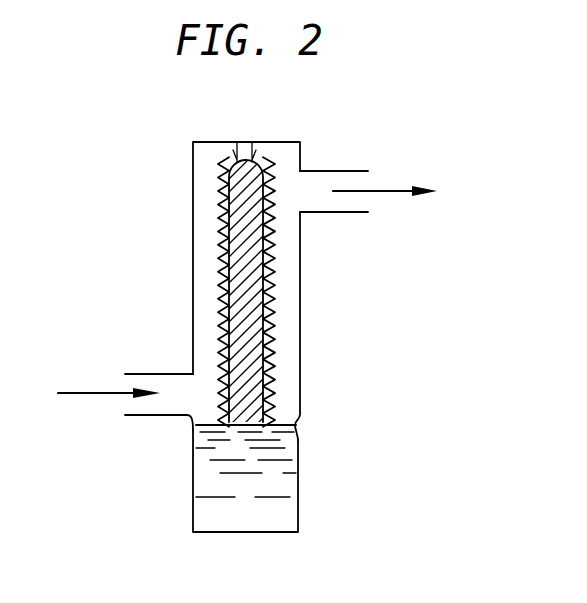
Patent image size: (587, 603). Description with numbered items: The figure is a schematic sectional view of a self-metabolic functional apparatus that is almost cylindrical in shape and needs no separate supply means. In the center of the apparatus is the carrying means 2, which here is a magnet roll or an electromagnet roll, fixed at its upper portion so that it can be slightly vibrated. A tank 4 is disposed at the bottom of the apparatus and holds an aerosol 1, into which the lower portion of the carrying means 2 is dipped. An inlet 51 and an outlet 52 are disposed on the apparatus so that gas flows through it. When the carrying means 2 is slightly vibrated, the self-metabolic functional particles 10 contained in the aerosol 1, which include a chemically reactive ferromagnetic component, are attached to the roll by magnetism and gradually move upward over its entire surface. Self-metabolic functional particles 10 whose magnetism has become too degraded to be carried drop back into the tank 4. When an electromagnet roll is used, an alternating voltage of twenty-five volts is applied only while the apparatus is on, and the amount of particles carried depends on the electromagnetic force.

The aerosol 1 is at (272, 492).
The carrying means 2 is at (252, 332).
The tank 4 is at (298, 478).
The self-metabolic functional particles 10 is at (270, 283).
The inlet 51 is at (125, 383).
The outlet 52 is at (368, 173).